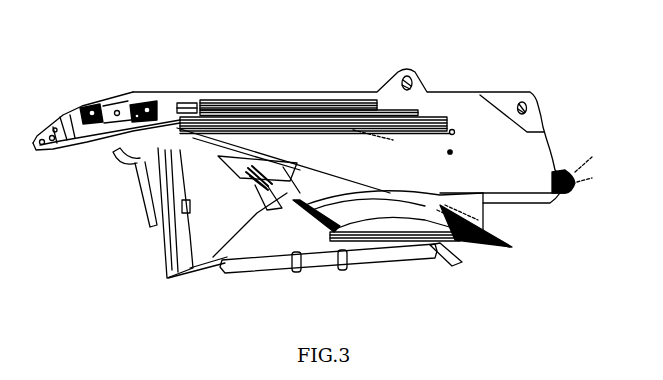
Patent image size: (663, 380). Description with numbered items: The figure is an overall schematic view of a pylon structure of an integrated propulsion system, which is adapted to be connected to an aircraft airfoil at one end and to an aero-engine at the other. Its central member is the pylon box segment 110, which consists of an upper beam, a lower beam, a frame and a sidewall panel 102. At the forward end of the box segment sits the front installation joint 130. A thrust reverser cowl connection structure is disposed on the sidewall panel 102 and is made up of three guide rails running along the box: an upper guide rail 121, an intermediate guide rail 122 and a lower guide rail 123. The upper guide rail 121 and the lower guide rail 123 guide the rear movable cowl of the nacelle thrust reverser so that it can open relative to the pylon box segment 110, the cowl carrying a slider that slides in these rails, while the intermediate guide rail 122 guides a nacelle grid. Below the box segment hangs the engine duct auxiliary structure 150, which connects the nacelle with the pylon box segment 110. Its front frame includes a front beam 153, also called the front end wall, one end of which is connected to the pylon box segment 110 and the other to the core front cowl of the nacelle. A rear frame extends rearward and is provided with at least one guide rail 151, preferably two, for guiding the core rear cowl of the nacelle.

The pylon box segment 110 is at (484, 128).
The upper guide rail 121 is at (200, 101).
The intermediate guide rail 122 is at (176, 114).
The lower guide rail 123 is at (437, 117).
The sidewall panel 102 is at (428, 157).
The front installation joint 130 is at (73, 117).
The engine duct auxiliary structure 150 is at (283, 230).
The guide rail 151 is at (390, 240).
The front beam 153 is at (172, 250).